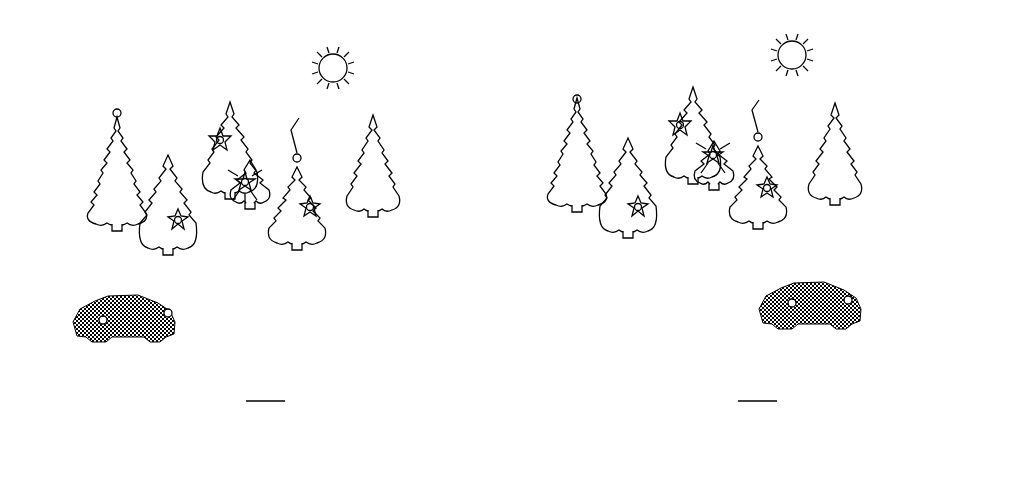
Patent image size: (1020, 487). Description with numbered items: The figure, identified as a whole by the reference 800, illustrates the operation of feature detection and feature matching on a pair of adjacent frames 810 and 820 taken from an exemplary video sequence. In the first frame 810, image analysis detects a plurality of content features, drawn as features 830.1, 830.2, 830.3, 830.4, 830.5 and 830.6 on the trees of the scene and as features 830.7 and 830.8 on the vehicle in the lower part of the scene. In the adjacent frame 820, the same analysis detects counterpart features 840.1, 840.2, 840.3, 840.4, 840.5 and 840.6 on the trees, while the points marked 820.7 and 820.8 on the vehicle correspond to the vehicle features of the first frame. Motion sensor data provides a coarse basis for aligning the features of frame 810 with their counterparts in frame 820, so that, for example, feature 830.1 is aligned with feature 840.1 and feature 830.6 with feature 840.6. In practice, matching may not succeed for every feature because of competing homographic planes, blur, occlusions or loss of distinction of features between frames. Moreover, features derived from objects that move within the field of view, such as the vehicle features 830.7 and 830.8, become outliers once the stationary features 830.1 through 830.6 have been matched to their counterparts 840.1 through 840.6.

The video frame sequence 800 is at (478, 254).
The frame 810 is at (208, 225).
The frame 820 is at (715, 218).
The feature 830.1 is at (107, 110).
The feature 830.2 is at (210, 137).
The feature 830.3 is at (296, 172).
The feature 830.4 is at (167, 217).
The feature 830.5 is at (243, 200).
The feature 830.6 is at (322, 210).
The feature 830.7 is at (91, 317).
The feature 830.8 is at (179, 316).
The feature 840.1 is at (567, 96).
The feature 840.2 is at (670, 122).
The feature 840.3 is at (759, 107).
The feature 840.4 is at (627, 204).
The feature 840.5 is at (710, 172).
The feature 840.6 is at (778, 191).
The car feature point 820.7 is at (782, 300).
The car rear feature point 820.8 is at (860, 302).